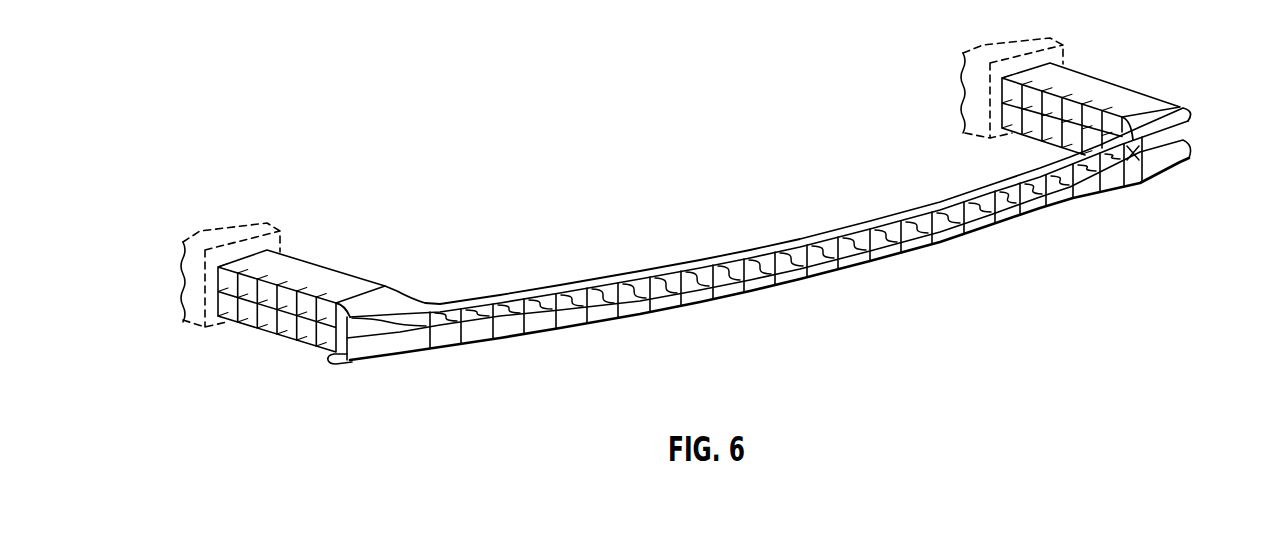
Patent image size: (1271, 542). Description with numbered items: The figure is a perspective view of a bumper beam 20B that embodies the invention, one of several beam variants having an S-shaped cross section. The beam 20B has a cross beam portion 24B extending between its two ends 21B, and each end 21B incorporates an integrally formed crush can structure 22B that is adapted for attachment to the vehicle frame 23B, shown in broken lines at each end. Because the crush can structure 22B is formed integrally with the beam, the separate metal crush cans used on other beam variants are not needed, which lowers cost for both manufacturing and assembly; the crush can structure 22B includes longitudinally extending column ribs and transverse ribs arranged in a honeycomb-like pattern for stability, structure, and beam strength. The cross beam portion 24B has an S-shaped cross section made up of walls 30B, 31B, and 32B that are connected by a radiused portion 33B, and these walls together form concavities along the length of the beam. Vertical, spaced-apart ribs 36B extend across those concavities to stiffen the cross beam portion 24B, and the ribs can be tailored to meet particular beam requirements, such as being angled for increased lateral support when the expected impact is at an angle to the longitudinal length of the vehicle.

The beam 20B is at (215, 148).
The end 21B is at (380, 349).
The crush can structure 22B is at (315, 266).
The vehicle frame 23B is at (264, 224).
The cross beam portion 24B is at (767, 243).
The wall 30B is at (913, 254).
The wall 31B is at (565, 305).
The wall 32B is at (673, 260).
The radiused portion 33B is at (735, 288).
The rib 36B is at (837, 270).